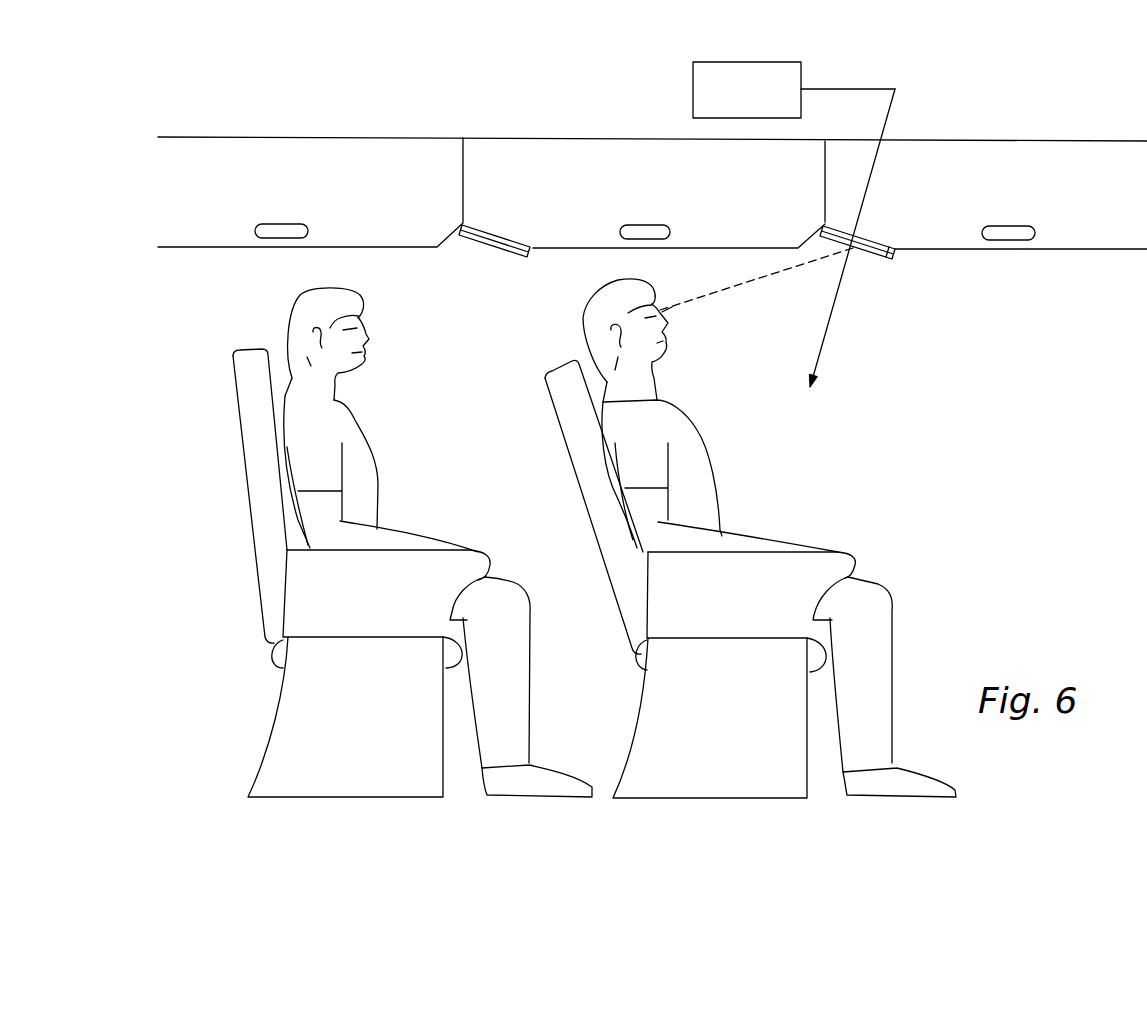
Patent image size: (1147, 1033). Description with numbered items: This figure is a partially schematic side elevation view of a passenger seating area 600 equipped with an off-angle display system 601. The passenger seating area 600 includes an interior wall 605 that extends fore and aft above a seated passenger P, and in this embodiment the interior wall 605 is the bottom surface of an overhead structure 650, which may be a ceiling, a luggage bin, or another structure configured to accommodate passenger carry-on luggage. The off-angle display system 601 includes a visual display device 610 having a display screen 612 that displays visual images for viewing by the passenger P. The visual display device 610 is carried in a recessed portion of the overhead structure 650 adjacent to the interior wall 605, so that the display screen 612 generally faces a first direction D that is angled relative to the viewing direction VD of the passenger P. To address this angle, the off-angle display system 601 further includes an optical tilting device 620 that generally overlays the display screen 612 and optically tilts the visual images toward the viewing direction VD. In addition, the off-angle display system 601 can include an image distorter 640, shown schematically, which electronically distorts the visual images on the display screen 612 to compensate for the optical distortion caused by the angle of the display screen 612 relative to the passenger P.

The passenger seating area 600 is at (761, 301).
The off-angle display system 601 is at (897, 294).
The interior wall 605 is at (1047, 249).
The visual display device 610 is at (895, 252).
The display screen 612 is at (868, 257).
The optical tilting device 620 is at (917, 279).
The image distorter 640 is at (725, 62).
The overhead structure 650 is at (1018, 193).
The passenger P is at (697, 437).
The first direction D is at (823, 343).
The viewing direction VD is at (728, 290).